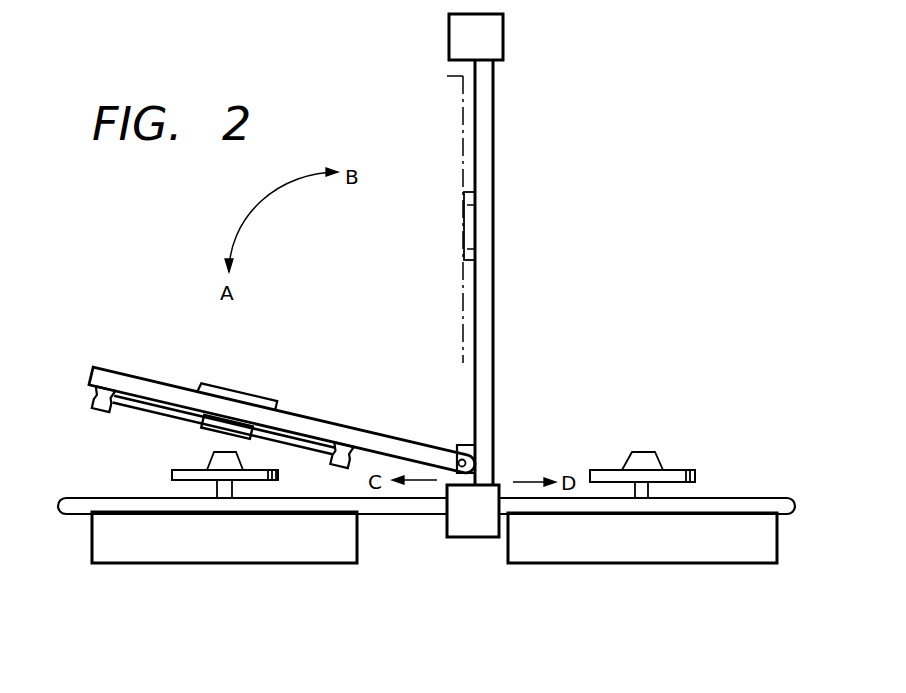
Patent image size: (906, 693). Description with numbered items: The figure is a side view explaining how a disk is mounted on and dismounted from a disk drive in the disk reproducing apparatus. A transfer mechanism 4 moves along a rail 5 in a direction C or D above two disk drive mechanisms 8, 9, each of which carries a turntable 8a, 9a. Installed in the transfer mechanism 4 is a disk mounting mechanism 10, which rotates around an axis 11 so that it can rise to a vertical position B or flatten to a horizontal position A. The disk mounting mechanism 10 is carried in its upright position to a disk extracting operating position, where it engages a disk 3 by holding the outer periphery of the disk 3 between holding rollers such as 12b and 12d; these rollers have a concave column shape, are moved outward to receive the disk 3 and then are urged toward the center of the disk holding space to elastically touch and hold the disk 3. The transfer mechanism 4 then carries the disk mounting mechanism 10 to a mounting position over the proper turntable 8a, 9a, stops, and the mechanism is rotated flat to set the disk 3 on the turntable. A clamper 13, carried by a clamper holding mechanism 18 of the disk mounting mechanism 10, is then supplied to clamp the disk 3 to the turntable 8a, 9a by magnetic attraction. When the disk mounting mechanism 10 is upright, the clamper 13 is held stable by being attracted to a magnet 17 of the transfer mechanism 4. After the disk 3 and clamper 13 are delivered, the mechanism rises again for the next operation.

The disk 3 is at (168, 417).
The transfer mechanism 4 is at (503, 33).
The rail 5 is at (732, 498).
The disk drive mechanism 8 is at (193, 563).
The turntable 8a is at (172, 475).
The disk drive mechanism 9 is at (660, 545).
The turntable 9a is at (610, 470).
The disk mounting mechanism 10 is at (100, 365).
The axis 11 is at (468, 456).
The holding roller 12b is at (97, 412).
The holding roller 12d is at (350, 450).
The clamper 13 is at (255, 395).
The magnet 17 is at (470, 218).
The clamper holding mechanism 18 is at (222, 390).